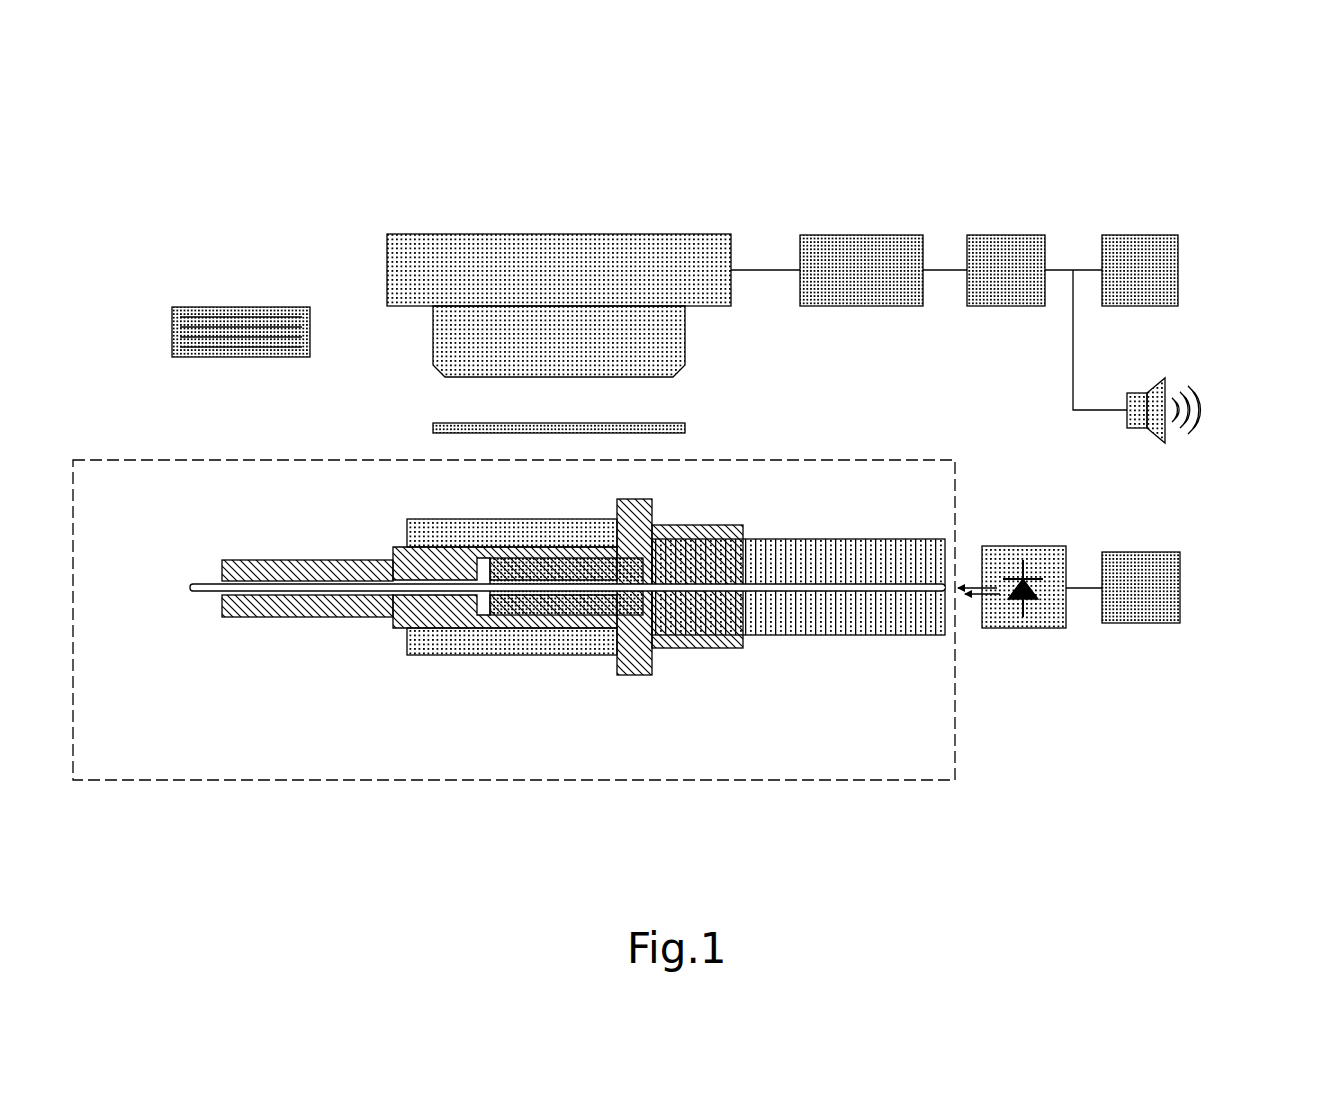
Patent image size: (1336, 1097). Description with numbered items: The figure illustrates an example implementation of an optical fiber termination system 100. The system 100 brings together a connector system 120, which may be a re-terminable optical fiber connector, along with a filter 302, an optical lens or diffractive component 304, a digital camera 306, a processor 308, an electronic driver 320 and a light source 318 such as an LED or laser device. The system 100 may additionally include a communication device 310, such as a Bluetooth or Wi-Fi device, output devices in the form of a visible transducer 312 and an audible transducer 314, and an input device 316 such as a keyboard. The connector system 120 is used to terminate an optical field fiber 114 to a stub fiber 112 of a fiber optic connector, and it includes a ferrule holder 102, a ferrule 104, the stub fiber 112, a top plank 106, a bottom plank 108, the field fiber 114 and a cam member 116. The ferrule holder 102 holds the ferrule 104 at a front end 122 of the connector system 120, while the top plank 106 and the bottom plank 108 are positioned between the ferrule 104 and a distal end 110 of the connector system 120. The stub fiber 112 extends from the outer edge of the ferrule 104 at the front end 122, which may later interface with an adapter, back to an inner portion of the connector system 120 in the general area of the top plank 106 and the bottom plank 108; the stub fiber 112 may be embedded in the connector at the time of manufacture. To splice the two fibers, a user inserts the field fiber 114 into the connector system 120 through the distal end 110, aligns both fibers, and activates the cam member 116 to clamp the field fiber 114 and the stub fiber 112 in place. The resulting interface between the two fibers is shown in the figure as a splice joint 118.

The optical fiber termination system 100 is at (1223, 137).
The ferrule holder 102 is at (697, 650).
The ferrule 104 is at (850, 550).
The top plank 106 is at (505, 570).
The bottom plank 108 is at (522, 605).
The distal end 110 is at (210, 600).
The stub fiber 112 is at (808, 595).
The field fiber 114 is at (205, 586).
The cam member 116 is at (433, 653).
The splice joint 118 is at (567, 592).
The connector system 120 is at (290, 782).
The front end 122 is at (901, 665).
The filter 302 is at (688, 428).
The optical lens or diffractive component 304 is at (665, 340).
The digital camera 306 is at (548, 265).
The processor 308 is at (870, 262).
The communication device 310 is at (1005, 262).
The visible transducer 312 is at (1140, 262).
The audible transducer 314 is at (1158, 390).
The input device 316 is at (213, 352).
The light source 318 is at (1040, 615).
The electronic driver 320 is at (1147, 600).